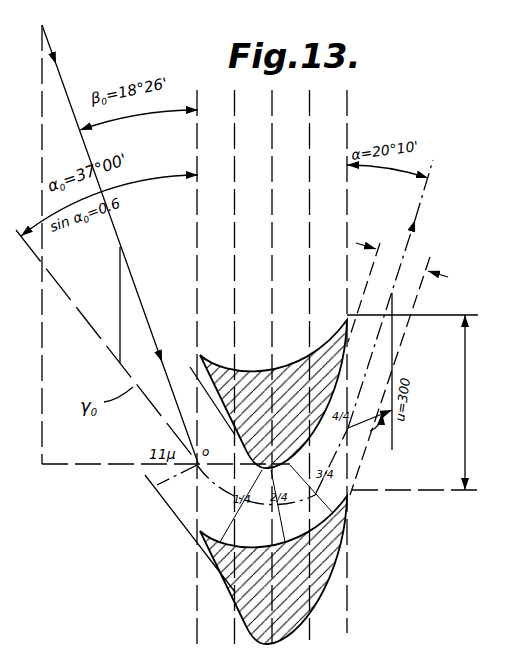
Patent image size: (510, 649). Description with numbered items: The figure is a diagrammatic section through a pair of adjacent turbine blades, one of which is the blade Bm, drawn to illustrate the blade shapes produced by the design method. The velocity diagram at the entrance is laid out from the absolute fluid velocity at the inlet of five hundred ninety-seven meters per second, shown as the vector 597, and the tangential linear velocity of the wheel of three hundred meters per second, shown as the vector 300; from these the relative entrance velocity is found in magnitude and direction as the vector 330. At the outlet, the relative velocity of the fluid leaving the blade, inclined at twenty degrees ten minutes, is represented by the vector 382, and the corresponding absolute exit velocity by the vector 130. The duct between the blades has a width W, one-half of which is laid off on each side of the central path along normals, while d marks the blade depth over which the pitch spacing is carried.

The turbine blade Bm is at (285, 380).
The width of the duct W is at (398, 369).
The blade height d is at (421, 402).
The inlet velocity C0 = 597 is at (131, 279).
The relative velocity 330 is at (107, 346).
The peripheral velocity u = 300 is at (108, 305).
The velocity y4 = 382 is at (388, 294).
The exit velocity C4 = 130 is at (372, 432).